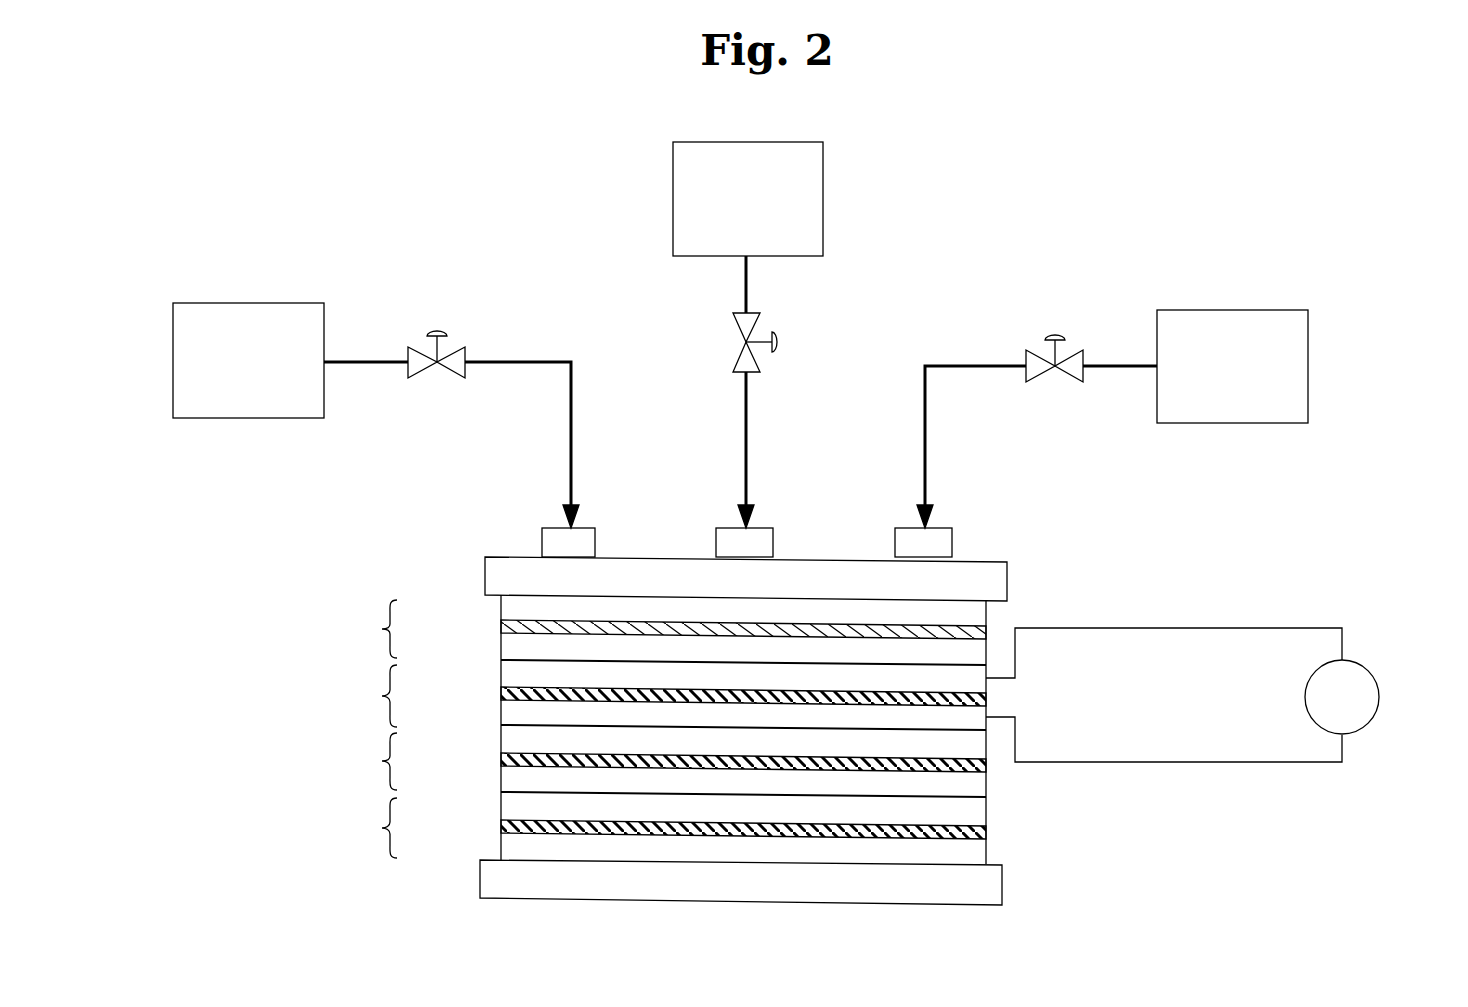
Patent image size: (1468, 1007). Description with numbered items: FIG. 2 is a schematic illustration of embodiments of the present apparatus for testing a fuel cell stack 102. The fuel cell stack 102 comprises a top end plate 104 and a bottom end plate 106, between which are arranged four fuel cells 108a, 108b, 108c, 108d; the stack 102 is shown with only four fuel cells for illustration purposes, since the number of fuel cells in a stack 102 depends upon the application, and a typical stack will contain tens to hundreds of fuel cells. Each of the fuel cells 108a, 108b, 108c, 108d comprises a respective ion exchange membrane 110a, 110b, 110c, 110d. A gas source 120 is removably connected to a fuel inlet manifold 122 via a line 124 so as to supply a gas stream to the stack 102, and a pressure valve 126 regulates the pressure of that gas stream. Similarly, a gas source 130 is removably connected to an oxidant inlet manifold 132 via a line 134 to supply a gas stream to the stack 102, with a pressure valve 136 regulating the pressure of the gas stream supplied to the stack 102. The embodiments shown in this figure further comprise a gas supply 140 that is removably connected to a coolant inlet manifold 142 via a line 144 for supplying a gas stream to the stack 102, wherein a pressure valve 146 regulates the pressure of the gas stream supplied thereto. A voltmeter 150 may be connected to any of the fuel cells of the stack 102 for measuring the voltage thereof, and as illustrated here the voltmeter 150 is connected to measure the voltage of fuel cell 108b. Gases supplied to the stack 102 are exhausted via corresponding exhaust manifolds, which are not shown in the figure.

The fuel cell stack 102 is at (1072, 850).
The top end plate 104 is at (1007, 580).
The bottom end plate 106 is at (517, 898).
The fuel cell 108a is at (355, 629).
The fuel cell 108b is at (355, 696).
The fuel cell 108c is at (355, 761).
The fuel cell 108d is at (355, 828).
The ion exchange membrane 110a is at (502, 622).
The ion exchange membrane 110b is at (502, 691).
The ion exchange membrane 110c is at (502, 764).
The ion exchange membrane 110d is at (502, 831).
The gas source 120 is at (248, 360).
The fuel inlet manifold 122 is at (540, 538).
The line 124 is at (570, 407).
The pressure valve 126 is at (437, 328).
The gas source 130 is at (1232, 366).
The oxidant inlet manifold 132 is at (955, 537).
The line 134 is at (925, 420).
The pressure valve 136 is at (1055, 332).
The gas supply 140 is at (748, 199).
The coolant inlet manifold 142 is at (726, 530).
The line 144 is at (745, 453).
The pressure valve 146 is at (778, 340).
The voltmeter 150 is at (1362, 660).